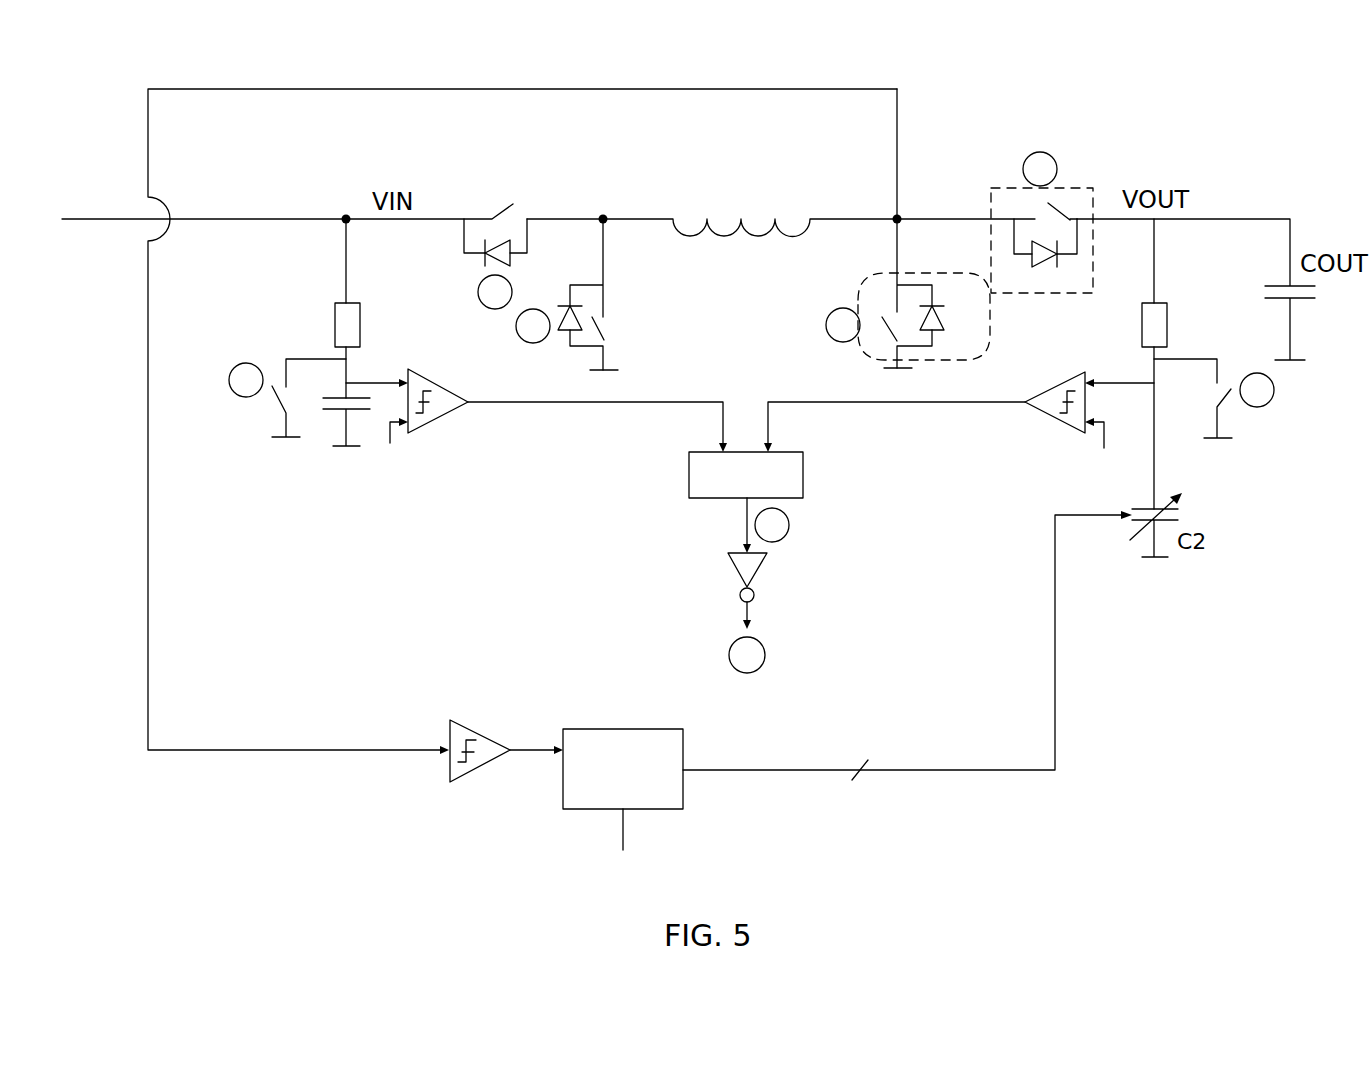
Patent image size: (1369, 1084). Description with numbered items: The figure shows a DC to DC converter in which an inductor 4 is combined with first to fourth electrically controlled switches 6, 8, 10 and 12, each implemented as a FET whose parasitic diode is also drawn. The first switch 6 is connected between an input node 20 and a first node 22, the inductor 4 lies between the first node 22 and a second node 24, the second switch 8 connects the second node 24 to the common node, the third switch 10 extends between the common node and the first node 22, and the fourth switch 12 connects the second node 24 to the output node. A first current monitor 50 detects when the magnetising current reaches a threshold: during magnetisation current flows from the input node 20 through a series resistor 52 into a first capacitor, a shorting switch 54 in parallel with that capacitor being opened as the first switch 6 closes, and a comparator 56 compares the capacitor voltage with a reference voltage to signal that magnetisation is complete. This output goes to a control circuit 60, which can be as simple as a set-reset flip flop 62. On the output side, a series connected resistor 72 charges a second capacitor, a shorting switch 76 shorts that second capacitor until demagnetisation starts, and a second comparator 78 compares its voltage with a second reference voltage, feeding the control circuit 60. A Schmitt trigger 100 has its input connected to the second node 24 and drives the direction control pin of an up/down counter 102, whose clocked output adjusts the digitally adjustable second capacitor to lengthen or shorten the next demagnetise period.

The inductor 4 is at (745, 216).
The first switch 6 is at (506, 205).
The second switch 8 is at (955, 273).
The third switch 10 is at (604, 317).
The fourth switch 12 is at (995, 188).
The input node 20 is at (342, 211).
The first node 22 is at (600, 211).
The second node 24 is at (892, 211).
The first current monitor 50 is at (470, 378).
The series resistor 52 is at (361, 326).
The shorting switch 54 is at (270, 407).
The comparator 56 is at (440, 381).
The control circuit 60 is at (728, 562).
The set-reset flip flop 62 is at (804, 472).
The series connected resistor 72 is at (1169, 326).
The shorting switch 76 is at (1236, 404).
The second comparator 78 is at (1054, 382).
The Schmitt trigger 100 is at (480, 768).
The up/down counter 102 is at (684, 797).